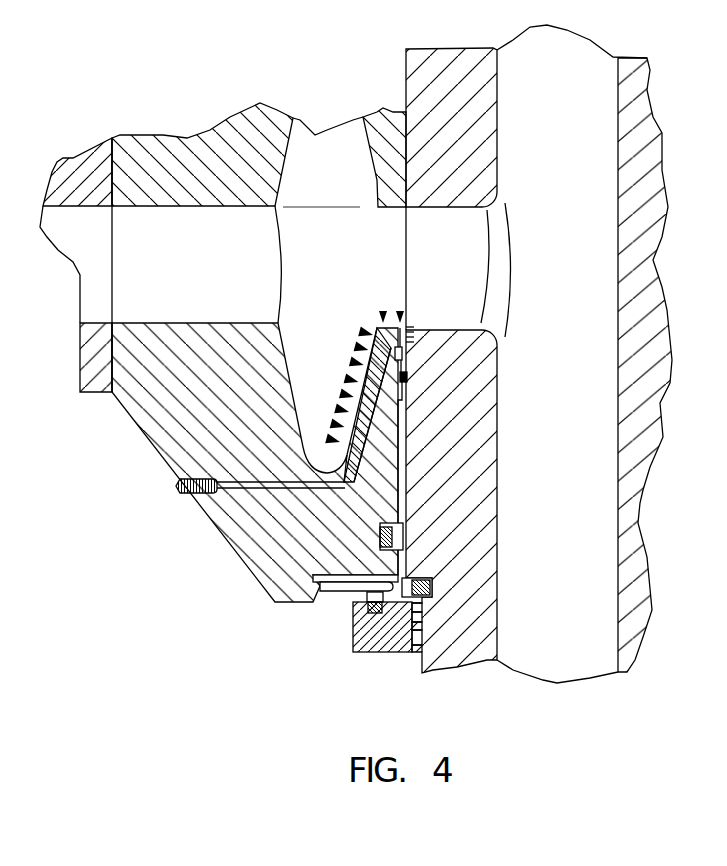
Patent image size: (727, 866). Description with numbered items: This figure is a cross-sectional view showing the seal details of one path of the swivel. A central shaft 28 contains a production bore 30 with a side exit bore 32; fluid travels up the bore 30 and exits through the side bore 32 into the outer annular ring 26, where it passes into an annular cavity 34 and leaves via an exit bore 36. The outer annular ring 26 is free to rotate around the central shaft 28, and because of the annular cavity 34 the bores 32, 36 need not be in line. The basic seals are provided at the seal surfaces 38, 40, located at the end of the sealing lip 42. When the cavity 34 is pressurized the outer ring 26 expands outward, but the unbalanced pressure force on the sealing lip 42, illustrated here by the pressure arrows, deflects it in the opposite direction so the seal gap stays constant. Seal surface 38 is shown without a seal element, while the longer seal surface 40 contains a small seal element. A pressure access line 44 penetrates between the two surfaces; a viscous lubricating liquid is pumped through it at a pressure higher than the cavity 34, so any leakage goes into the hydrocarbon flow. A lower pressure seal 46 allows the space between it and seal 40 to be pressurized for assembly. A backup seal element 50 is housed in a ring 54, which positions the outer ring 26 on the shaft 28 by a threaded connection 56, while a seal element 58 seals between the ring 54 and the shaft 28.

The outer annular ring 26 is at (150, 403).
The central shaft 28 is at (582, 436).
The production bore 30 is at (567, 137).
The side exit bore 32 is at (465, 265).
The annular cavity 34 is at (353, 265).
The exit bore 36 is at (97, 253).
The seal surface 38 is at (405, 350).
The seal surface 40 is at (407, 388).
The sealing lip 42 is at (370, 437).
The pressure access line 44 is at (158, 487).
The seal 46 is at (392, 537).
The backup seal element 50 is at (363, 597).
The ring 54 is at (380, 632).
The threaded connection 56 is at (424, 632).
The seal element 58 is at (430, 588).